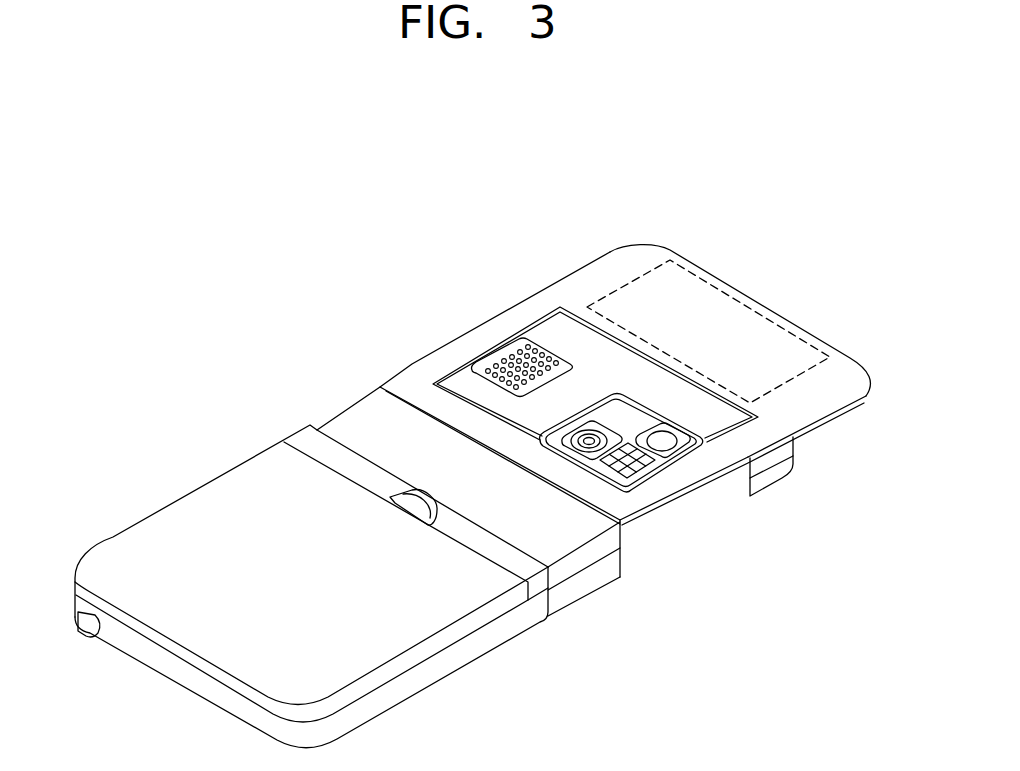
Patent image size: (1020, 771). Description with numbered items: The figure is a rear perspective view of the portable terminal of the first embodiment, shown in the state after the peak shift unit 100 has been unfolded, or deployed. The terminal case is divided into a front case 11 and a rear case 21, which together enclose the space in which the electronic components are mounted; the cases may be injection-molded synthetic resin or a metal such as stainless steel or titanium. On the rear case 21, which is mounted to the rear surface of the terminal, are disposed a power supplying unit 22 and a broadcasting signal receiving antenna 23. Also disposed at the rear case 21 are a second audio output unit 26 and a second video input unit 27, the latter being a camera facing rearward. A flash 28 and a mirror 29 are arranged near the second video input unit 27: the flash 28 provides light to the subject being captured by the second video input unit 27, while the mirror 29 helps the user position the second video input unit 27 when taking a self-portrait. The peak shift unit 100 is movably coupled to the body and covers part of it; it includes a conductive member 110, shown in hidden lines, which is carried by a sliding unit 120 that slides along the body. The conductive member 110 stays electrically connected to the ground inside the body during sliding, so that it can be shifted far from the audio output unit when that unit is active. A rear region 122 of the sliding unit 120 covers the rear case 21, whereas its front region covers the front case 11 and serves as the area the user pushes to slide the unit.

The front case 11 is at (779, 478).
The rear case 21 is at (784, 452).
The power supplying unit 22 is at (183, 513).
The broadcasting signal receiving antenna 23 is at (92, 630).
The second audio output unit 26 is at (497, 353).
The second video input unit 27 is at (589, 444).
The flash 28 is at (637, 468).
The mirror 29 is at (665, 443).
The peak shift unit 100 is at (850, 420).
The conductive member 110 is at (733, 308).
The sliding unit 120 is at (709, 256).
The rear region 122 is at (845, 362).